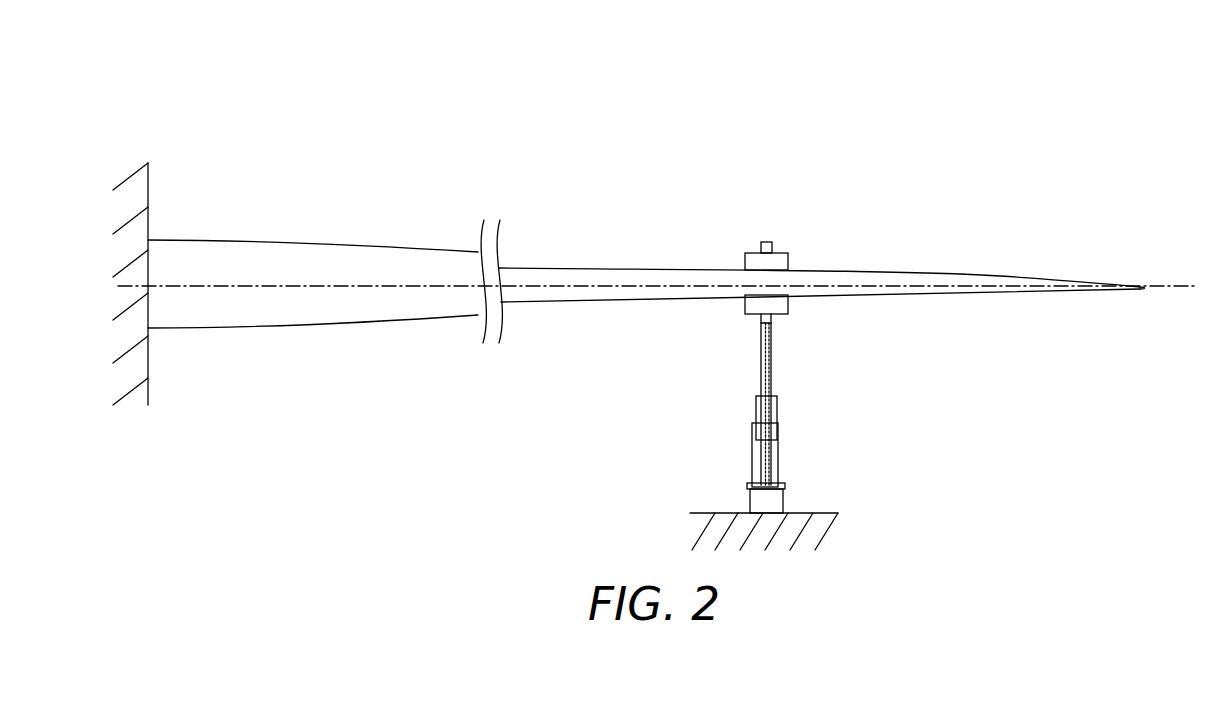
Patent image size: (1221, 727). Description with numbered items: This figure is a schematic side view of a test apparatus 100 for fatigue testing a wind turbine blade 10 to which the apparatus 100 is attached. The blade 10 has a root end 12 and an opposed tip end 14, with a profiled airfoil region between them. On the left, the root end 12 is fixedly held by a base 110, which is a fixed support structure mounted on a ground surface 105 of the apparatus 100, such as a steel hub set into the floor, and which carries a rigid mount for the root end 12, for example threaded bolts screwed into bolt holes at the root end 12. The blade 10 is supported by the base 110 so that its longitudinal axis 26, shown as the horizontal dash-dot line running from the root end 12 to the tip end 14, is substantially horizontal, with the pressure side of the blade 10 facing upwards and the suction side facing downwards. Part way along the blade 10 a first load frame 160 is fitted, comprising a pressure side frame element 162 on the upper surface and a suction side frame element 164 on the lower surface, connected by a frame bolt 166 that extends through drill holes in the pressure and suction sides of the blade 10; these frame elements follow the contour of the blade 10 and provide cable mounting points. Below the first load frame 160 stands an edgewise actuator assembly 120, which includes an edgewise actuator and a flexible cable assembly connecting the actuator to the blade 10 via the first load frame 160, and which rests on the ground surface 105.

The test apparatus 100 is at (248, 107).
The base 110 is at (150, 188).
The wind turbine blade 10 is at (670, 288).
The root end 12 is at (178, 330).
The tip end 14 is at (1146, 290).
The longitudinal axis 26 is at (596, 287).
The first load frame 160 is at (767, 253).
The pressure side frame element 162 is at (790, 266).
The suction side frame element 164 is at (745, 305).
The frame bolt 166 is at (767, 241).
The edgewise actuator assembly 120 is at (797, 456).
The ground surface 105 is at (705, 512).